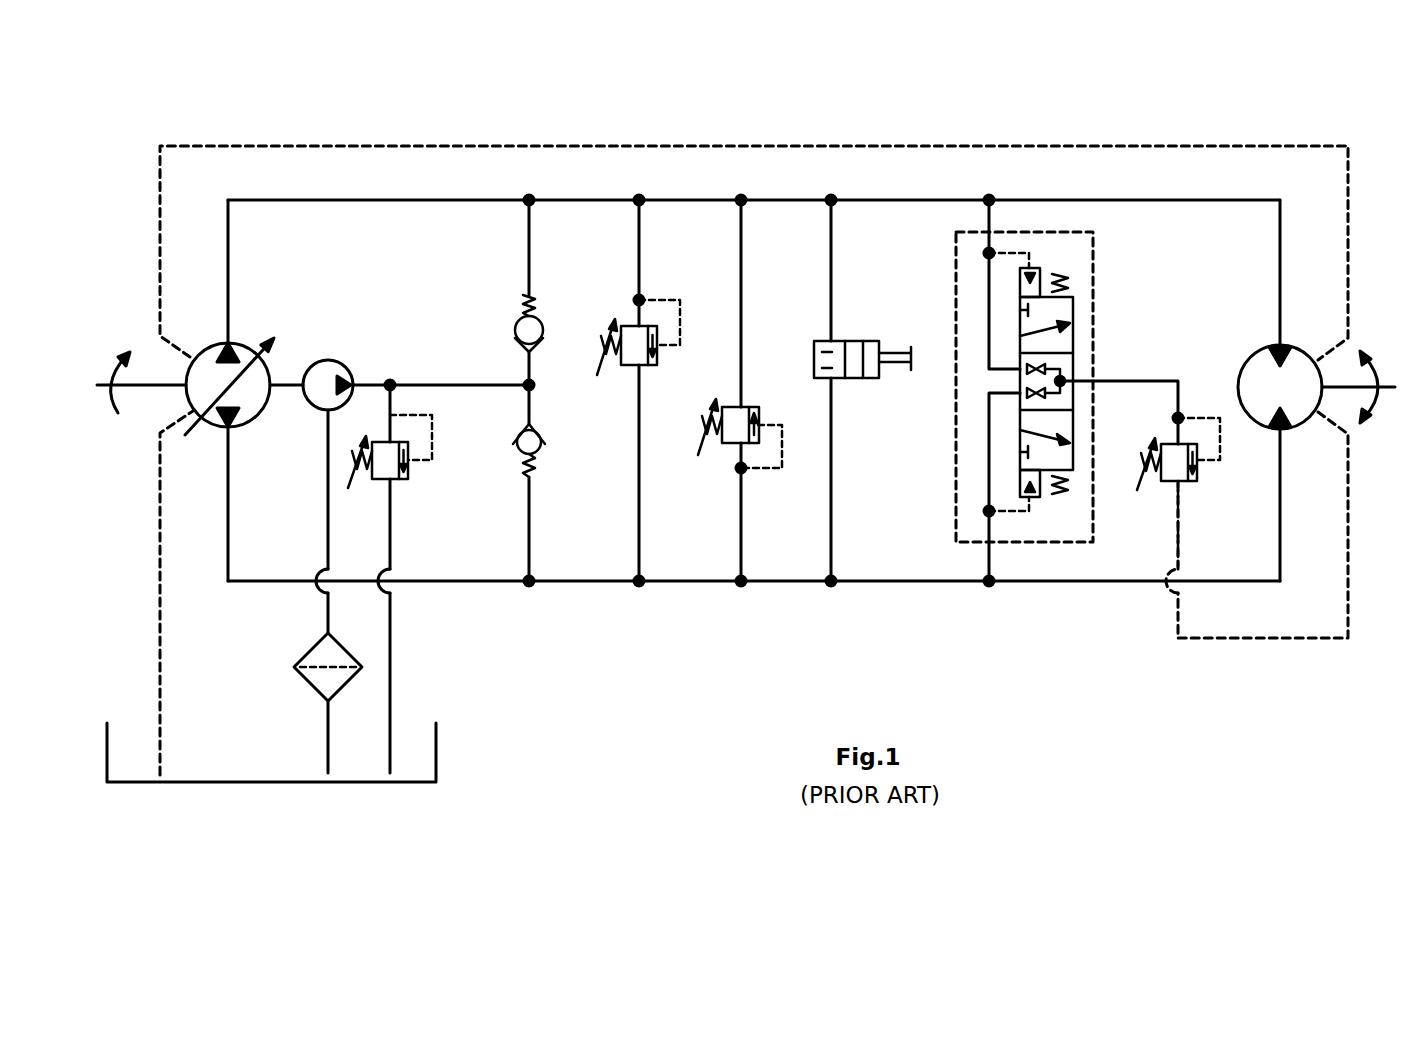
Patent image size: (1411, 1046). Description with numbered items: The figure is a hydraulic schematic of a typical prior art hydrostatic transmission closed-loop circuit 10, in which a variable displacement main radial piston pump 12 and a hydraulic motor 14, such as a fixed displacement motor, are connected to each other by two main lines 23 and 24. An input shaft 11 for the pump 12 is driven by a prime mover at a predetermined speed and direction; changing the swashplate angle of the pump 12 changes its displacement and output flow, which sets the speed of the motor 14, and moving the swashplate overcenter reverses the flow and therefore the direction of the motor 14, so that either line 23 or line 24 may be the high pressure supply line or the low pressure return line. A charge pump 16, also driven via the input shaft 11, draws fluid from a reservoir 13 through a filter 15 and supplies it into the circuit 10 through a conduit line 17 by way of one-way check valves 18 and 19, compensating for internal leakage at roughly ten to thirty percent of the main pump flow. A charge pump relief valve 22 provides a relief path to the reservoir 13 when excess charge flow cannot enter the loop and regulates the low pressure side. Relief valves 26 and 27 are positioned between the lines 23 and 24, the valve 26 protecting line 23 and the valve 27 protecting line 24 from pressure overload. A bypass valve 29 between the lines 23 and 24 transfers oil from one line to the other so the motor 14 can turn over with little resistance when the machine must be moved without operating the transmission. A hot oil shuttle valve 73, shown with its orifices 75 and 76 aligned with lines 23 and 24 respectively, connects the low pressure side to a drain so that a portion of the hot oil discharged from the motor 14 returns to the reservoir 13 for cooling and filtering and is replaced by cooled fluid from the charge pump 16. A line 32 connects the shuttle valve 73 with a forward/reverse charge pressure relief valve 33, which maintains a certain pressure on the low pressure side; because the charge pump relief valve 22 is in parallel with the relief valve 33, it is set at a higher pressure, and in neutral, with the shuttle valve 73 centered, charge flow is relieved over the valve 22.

The hydrostatic transmission closed-loop circuit 10 is at (165, 97).
The input shaft 11 is at (97, 388).
The variable displacement main radial piston pump 12 is at (197, 370).
The reservoir 13 is at (436, 752).
The hydraulic motor 14 is at (1298, 348).
The filter 15 is at (320, 655).
The charge pump 16 is at (332, 362).
The conduit line 17 is at (460, 383).
The one-way check valve 18 is at (522, 318).
The one-way check valve 19 is at (540, 448).
The charge pump relief valve 22 is at (408, 475).
The line 23 is at (681, 198).
The line 24 is at (862, 583).
The relief valve 26 is at (632, 325).
The relief valve 27 is at (730, 445).
The bypass valve 29 is at (852, 340).
The line 32 is at (1182, 395).
The forward/reverse charge pressure relief valve 33 is at (1170, 478).
The hot oil shuttle valve 73 is at (1022, 338).
The orifice 75 is at (1035, 368).
The orifice 76 is at (1030, 392).